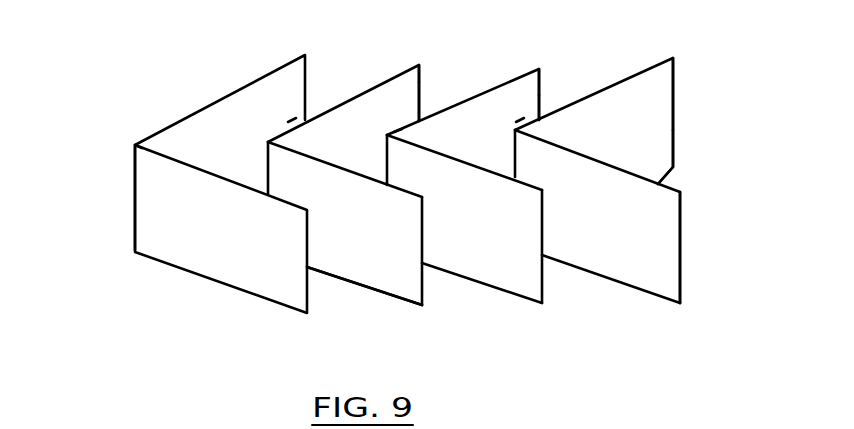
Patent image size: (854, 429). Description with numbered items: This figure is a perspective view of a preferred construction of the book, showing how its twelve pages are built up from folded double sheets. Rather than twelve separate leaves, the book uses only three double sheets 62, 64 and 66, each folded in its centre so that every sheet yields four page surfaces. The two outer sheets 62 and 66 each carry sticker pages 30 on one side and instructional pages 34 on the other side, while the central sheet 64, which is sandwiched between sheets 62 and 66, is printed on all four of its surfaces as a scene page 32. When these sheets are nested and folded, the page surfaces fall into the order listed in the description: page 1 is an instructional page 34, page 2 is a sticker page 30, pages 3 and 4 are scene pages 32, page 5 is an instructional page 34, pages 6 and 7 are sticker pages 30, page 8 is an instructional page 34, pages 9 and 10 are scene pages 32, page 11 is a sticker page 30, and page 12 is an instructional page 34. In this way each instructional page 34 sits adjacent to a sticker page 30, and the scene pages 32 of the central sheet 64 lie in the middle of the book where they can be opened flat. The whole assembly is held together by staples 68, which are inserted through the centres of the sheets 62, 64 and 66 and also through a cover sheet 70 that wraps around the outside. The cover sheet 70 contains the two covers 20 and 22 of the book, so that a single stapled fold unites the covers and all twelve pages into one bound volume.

The page 1 is at (410, 300).
The page 2 is at (416, 288).
The page 3 is at (522, 296).
The page 4 is at (535, 287).
The page 5 is at (660, 288).
The page 6 is at (673, 287).
The page 7 is at (680, 155).
The page 8 is at (670, 148).
The page 9 is at (548, 95).
The page 10 is at (535, 72).
The page 11 is at (428, 82).
The page 12 is at (406, 79).
The cover 20 is at (212, 276).
The cover 22 is at (212, 103).
The sticker page 30 is at (370, 139).
The scene page 32 is at (483, 93).
The instructional page 34 is at (358, 93).
The double sheet 62 is at (287, 116).
The central sheet 64 is at (394, 123).
The double sheet 66 is at (521, 108).
The staple 68 is at (130, 161).
The cover sheet 70 is at (132, 140).